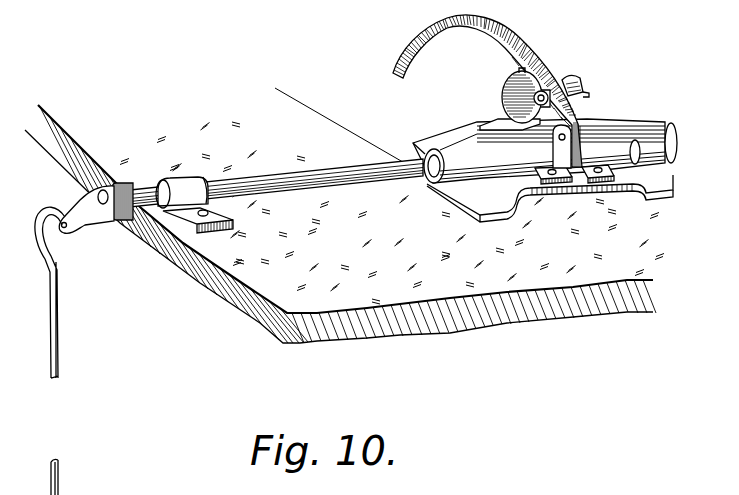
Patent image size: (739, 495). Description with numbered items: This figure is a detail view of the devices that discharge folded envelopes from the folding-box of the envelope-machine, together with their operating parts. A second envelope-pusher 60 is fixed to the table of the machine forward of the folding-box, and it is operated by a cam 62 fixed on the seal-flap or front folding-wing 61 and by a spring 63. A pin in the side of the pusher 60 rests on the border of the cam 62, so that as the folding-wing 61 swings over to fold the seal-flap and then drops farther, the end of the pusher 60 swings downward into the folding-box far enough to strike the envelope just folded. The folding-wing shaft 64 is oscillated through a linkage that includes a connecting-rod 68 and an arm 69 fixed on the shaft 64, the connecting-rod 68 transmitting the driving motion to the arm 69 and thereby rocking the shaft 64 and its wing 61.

The second envelope-pusher 60 is at (501, 33).
The seal-flap or front folding-wing 61 is at (545, 151).
The cam 62 is at (504, 97).
The spring 63 is at (571, 83).
The folding-wing shaft 64 is at (327, 177).
The connecting-rod 68 is at (60, 365).
The arm 69 is at (96, 208).